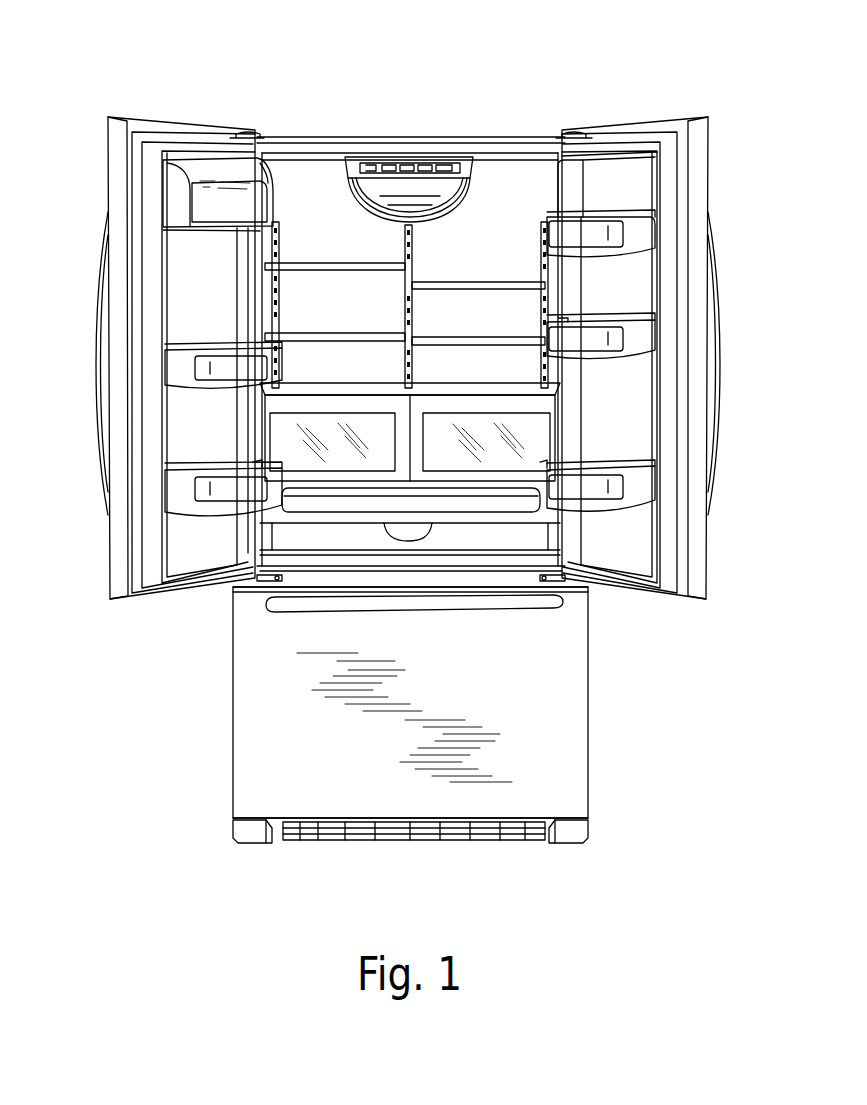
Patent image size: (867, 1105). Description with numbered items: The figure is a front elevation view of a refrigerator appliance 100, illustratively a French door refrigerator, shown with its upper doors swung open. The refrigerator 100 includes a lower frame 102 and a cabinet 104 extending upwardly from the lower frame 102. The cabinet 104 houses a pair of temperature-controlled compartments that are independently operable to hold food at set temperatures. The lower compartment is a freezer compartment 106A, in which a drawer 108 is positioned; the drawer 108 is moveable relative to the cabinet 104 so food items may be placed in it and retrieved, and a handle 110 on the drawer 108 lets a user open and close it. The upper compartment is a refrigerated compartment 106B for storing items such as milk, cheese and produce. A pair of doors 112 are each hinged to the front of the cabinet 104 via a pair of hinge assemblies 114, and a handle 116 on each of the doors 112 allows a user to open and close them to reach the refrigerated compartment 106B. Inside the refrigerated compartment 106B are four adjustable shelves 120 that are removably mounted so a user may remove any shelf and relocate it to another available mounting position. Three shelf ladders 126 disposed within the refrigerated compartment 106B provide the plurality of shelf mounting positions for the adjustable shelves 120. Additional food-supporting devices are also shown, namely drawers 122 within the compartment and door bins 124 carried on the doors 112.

The refrigerator appliance 100 is at (465, 76).
The lower frame 102 is at (578, 840).
The cabinet 104 is at (314, 138).
The freezer compartment 106A is at (613, 690).
The refrigerated compartment 106B is at (503, 185).
The drawer 108 is at (578, 752).
The handle 110 is at (282, 612).
The doors 112 is at (118, 598).
The hinge assemblies 114 is at (246, 130).
The handle 116 is at (100, 333).
The adjustable shelves 120 is at (335, 270).
The drawers 122 is at (280, 435).
The door bins 124 is at (172, 193).
The shelf ladders 126 is at (279, 224).